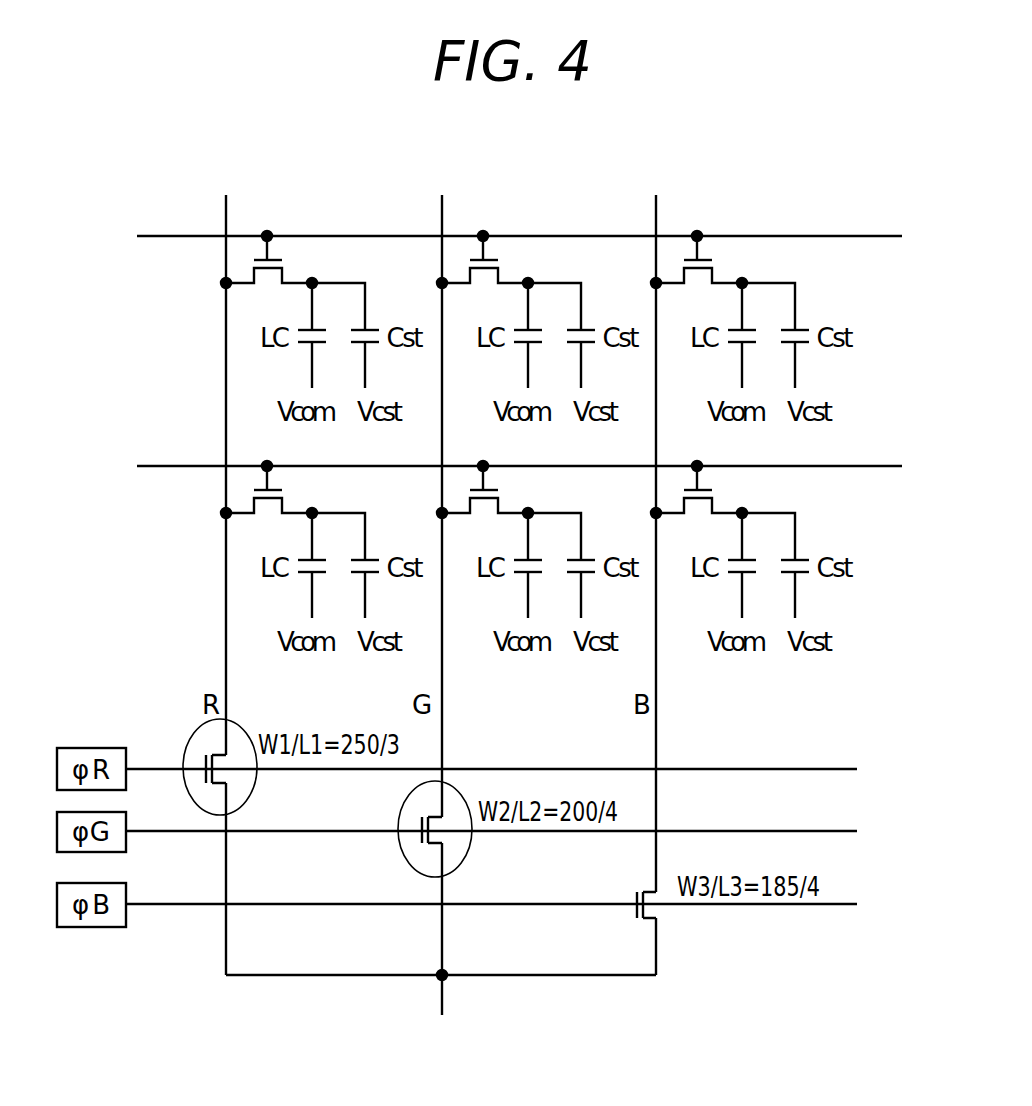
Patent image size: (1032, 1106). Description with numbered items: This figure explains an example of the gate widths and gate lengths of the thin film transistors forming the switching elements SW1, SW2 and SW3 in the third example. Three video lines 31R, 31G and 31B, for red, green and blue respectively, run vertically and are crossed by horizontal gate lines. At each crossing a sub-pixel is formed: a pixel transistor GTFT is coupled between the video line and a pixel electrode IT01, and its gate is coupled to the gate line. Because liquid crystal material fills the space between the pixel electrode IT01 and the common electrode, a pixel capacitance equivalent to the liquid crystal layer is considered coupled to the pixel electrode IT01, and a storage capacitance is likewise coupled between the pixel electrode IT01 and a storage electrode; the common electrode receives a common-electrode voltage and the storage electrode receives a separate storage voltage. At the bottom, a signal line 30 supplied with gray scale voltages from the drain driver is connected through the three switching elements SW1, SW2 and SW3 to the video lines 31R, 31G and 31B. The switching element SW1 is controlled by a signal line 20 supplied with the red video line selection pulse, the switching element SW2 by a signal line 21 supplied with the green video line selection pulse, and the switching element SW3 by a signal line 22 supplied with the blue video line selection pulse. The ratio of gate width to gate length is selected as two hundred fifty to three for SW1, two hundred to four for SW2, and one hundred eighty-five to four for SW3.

The video line for red 31R is at (226, 212).
The video line for green 31G is at (442, 212).
The video line for blue 31B is at (656, 212).
The pixel transistor GTFT is at (747, 237).
The pixel electrode IT01 is at (822, 295).
The signal line supplied with video line selection pulse φR 20 is at (842, 769).
The signal line supplied with video line selection pulse φG 21 is at (842, 831).
The signal line supplied with video line selection pulse φB 22 is at (842, 904).
The signal line supplied with gray scale voltages 30 is at (440, 1000).
The switching element SW1 is at (232, 777).
The switching element SW2 is at (412, 843).
The switching element SW3 is at (628, 913).